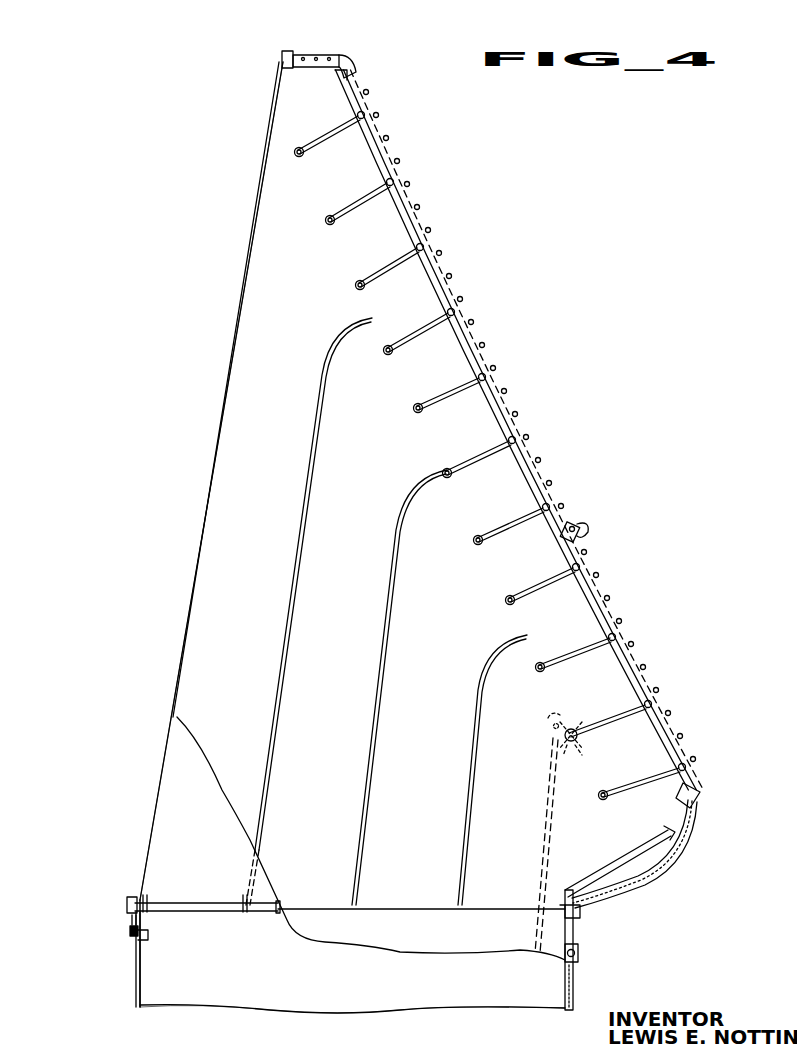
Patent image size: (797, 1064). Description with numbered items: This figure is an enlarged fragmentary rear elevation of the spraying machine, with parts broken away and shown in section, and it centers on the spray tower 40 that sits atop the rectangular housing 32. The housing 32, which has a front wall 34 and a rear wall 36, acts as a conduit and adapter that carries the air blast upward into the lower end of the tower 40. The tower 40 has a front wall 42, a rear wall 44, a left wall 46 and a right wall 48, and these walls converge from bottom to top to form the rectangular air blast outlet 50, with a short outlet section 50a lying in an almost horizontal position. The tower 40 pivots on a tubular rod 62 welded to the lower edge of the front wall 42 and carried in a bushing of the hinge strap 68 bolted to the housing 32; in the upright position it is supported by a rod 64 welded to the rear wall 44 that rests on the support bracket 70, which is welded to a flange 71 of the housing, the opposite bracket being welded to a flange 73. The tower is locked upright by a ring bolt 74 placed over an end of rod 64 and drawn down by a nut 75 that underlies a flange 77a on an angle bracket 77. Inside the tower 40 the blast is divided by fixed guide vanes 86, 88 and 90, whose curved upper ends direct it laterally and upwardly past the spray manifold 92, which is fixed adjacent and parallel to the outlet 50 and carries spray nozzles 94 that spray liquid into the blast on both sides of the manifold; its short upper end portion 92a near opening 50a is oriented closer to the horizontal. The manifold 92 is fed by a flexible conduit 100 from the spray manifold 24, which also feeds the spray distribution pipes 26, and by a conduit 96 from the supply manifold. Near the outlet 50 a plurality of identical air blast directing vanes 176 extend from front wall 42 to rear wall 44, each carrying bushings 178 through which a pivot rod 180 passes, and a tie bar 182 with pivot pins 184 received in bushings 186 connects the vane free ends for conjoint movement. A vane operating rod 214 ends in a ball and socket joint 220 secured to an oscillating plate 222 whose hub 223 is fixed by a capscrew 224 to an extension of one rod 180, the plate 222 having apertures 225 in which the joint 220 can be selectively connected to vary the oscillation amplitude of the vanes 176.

The spray manifold 24 is at (573, 985).
The spray distribution pipes 26 is at (578, 952).
The rectangular housing 32 is at (138, 1000).
The front wall 34 is at (421, 926).
The rear wall 36 is at (352, 990).
The spray tower 40 is at (222, 401).
The front wall 42 is at (371, 743).
The rear wall 44 is at (190, 856).
The left wall 46 is at (205, 513).
The right wall 48 is at (620, 862).
The air blast outlet 50 is at (500, 392).
The short outlet section 50a is at (325, 52).
The tubular rod 62 is at (585, 906).
The rod 64 is at (215, 905).
The hinge strap 68 is at (560, 912).
The support bracket 70 is at (150, 918).
The flange 71 is at (136, 985).
The flange 73 is at (565, 990).
The ring bolt 74 is at (131, 896).
The nut 75 is at (128, 933).
The angle bracket 77 is at (134, 940).
The flange 77a is at (130, 925).
The fixed guide vane 86 is at (306, 470).
The fixed guide vane 88 is at (380, 640).
The fixed guide vane 90 is at (468, 783).
The spray manifold 92 is at (482, 307).
The upper end portion 92a is at (341, 74).
The spray nozzles 94 is at (413, 203).
The conduit 96 is at (588, 540).
The flexible conduit 100 is at (640, 886).
The air blast directing vanes 176 is at (330, 138).
The bushings 178 is at (391, 356).
The rod 180 is at (354, 280).
The tie bar 182 is at (432, 292).
The pivot pins 184 is at (413, 248).
The bushings 186 is at (446, 323).
The vane operating rod 214 is at (540, 842).
The ball and socket joint 220 is at (547, 746).
The oscillating plate 222 is at (553, 718).
The hub 223 is at (575, 742).
The capscrew 224 is at (585, 745).
The apertures 225 is at (545, 727).